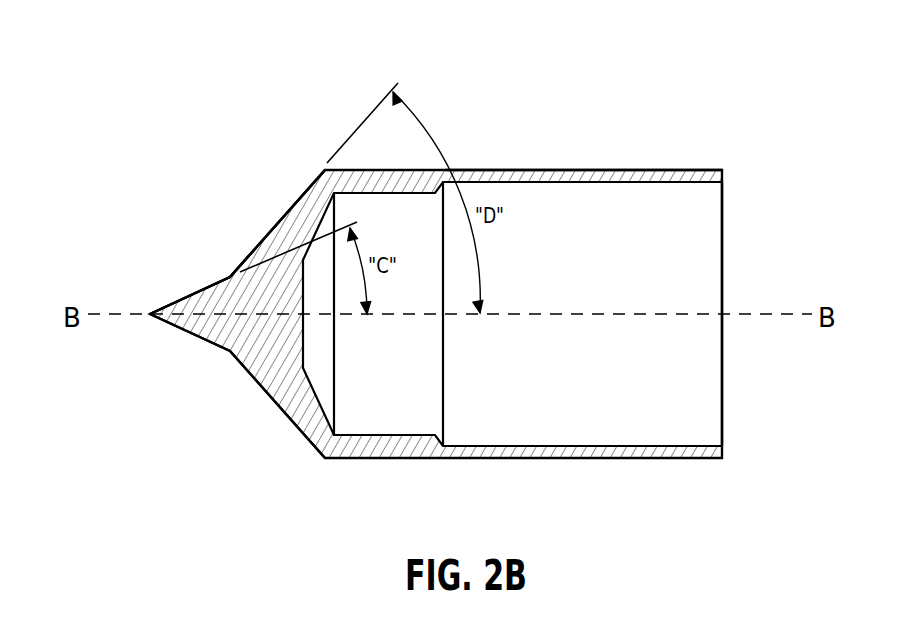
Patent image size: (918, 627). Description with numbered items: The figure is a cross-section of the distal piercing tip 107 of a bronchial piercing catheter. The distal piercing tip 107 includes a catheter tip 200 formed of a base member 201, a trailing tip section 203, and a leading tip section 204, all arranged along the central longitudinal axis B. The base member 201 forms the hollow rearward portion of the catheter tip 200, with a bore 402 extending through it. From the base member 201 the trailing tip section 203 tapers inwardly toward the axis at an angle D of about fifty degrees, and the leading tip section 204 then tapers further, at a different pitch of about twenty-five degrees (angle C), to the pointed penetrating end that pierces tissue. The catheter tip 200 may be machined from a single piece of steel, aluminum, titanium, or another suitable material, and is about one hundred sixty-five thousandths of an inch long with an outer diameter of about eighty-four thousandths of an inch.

The distal piercing tip 107 is at (188, 130).
The catheter tip 200 is at (686, 170).
The base member 201 is at (564, 169).
The bore 402 is at (708, 237).
The trailing tip section 203 is at (276, 396).
The leading tip section 204 is at (177, 328).